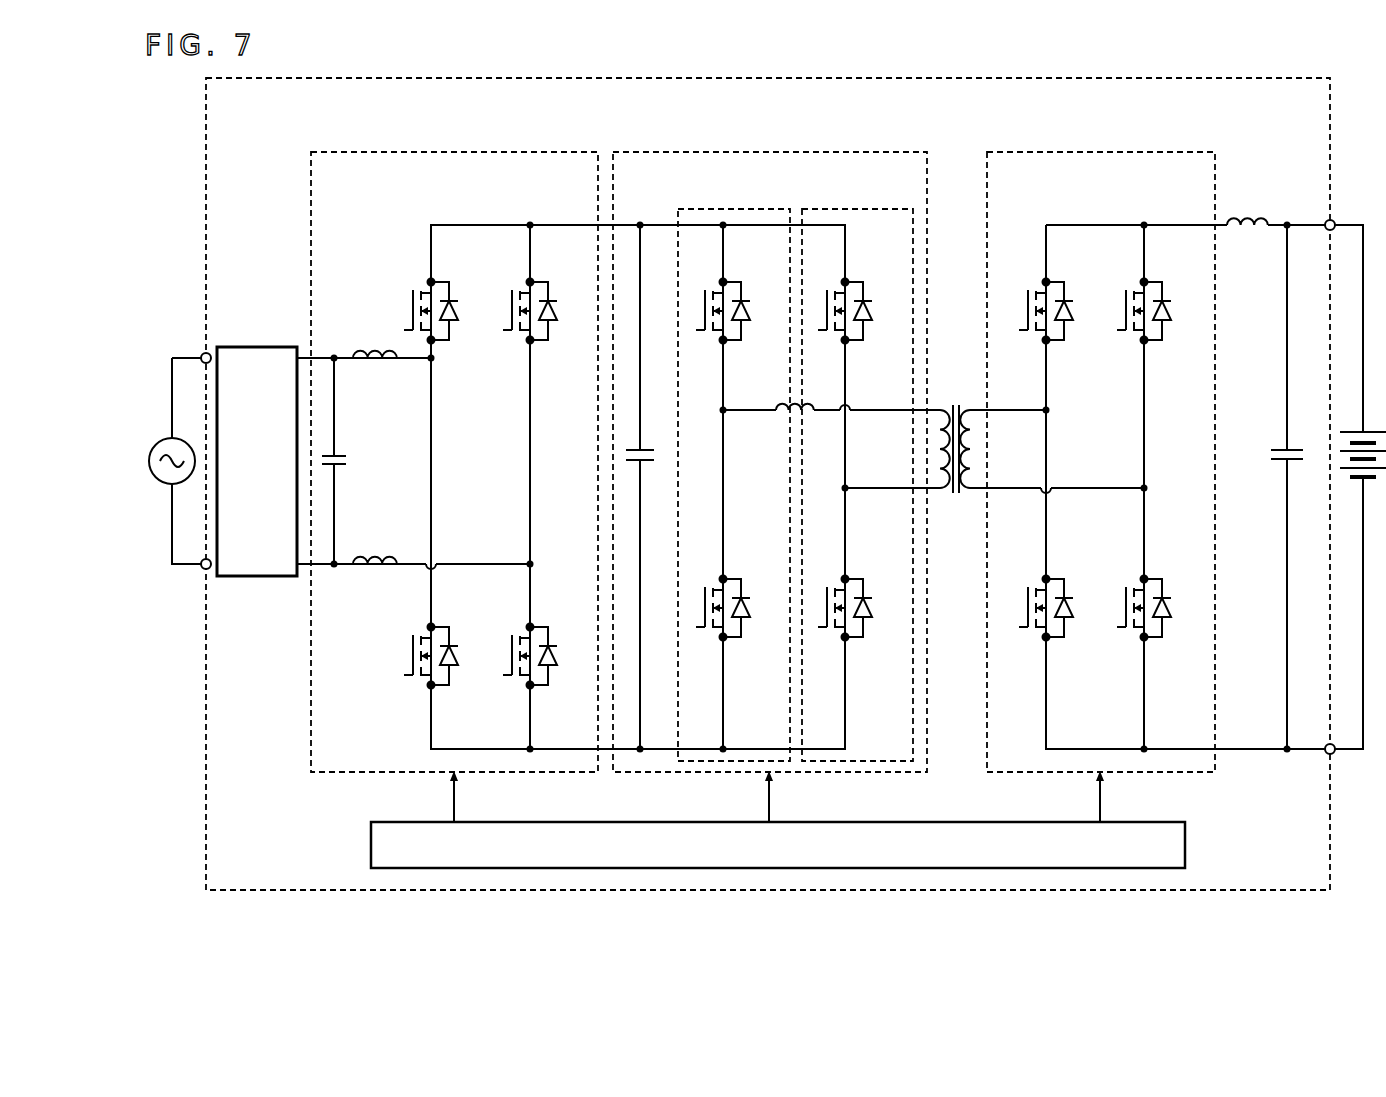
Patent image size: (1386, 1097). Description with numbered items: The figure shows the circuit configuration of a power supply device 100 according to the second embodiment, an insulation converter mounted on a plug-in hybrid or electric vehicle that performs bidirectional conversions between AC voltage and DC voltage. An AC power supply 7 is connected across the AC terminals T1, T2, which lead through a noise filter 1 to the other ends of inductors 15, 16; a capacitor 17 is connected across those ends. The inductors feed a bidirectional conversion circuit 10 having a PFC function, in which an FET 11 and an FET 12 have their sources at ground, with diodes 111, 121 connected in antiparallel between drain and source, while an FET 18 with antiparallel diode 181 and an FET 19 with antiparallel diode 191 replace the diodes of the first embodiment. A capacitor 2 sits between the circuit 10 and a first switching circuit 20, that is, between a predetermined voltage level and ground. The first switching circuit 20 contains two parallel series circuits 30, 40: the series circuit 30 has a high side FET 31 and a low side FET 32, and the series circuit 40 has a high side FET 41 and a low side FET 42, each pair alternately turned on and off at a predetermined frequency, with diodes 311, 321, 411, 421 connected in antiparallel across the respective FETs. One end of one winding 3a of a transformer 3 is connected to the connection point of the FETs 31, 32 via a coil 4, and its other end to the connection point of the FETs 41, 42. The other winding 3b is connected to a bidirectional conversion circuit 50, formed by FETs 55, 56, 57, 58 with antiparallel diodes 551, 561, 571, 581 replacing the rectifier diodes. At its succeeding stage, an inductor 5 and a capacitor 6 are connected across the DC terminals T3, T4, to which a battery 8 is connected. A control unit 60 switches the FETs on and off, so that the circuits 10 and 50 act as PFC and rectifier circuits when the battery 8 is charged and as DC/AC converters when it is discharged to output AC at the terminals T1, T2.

The power supply device 100 is at (400, 78).
The bidirectional conversion circuit 10 is at (418, 152).
The first switching circuit 20 is at (805, 152).
The series circuit 30 is at (720, 209).
The series circuit 40 is at (835, 209).
The bidirectional conversion circuit 50 is at (1103, 152).
The control unit 60 is at (1142, 822).
The noise filter 1 is at (257, 347).
The capacitor 2 is at (647, 448).
The transformer 3 is at (956, 420).
The winding 3a is at (939, 440).
The winding 3b is at (984, 441).
The coil 4 is at (782, 420).
The inductor 5 is at (1247, 236).
The capacitor 6 is at (1274, 444).
The AC power supply 7 is at (164, 488).
The battery 8 is at (1352, 494).
The FET 11 is at (406, 639).
The FET 12 is at (506, 639).
The inductor 15 is at (384, 348).
The inductor 16 is at (384, 551).
The capacitor 17 is at (348, 461).
The FET 18 is at (406, 294).
The FET 19 is at (504, 294).
The diode 111 is at (452, 687).
The diode 121 is at (551, 687).
The diode 181 is at (452, 342).
The diode 191 is at (551, 342).
The FET 31 is at (712, 294).
The FET 32 is at (710, 590).
The FET 41 is at (834, 294).
The FET 42 is at (835, 590).
The diode 311 is at (744, 342).
The diode 321 is at (744, 639).
The diode 411 is at (866, 342).
The diode 421 is at (866, 639).
The FET 55 is at (1035, 294).
The FET 56 is at (1035, 590).
The FET 57 is at (1134, 294).
The FET 58 is at (1134, 590).
The diode 551 is at (1067, 342).
The diode 561 is at (1067, 639).
The diode 571 is at (1165, 342).
The diode 581 is at (1165, 639).
The AC terminal T1 is at (203, 353).
The AC terminal T2 is at (203, 570).
The DC terminal T3 is at (1334, 221).
The DC terminal T4 is at (1334, 754).